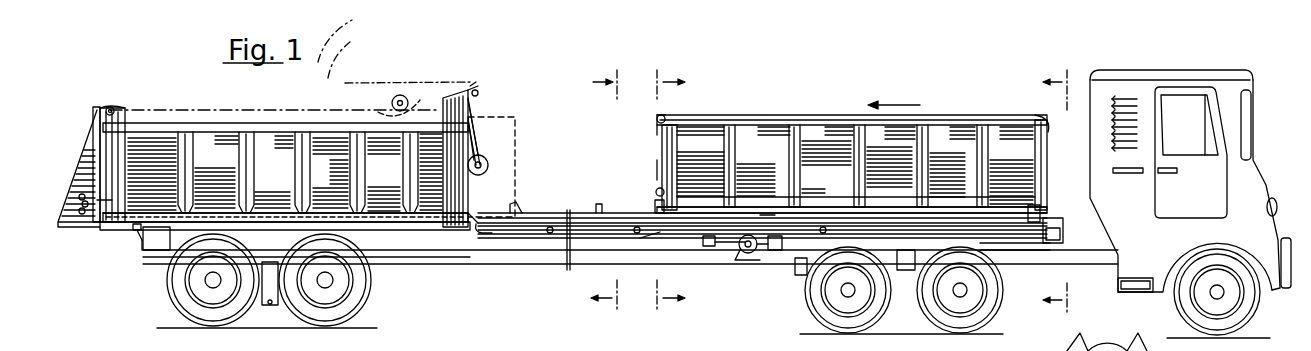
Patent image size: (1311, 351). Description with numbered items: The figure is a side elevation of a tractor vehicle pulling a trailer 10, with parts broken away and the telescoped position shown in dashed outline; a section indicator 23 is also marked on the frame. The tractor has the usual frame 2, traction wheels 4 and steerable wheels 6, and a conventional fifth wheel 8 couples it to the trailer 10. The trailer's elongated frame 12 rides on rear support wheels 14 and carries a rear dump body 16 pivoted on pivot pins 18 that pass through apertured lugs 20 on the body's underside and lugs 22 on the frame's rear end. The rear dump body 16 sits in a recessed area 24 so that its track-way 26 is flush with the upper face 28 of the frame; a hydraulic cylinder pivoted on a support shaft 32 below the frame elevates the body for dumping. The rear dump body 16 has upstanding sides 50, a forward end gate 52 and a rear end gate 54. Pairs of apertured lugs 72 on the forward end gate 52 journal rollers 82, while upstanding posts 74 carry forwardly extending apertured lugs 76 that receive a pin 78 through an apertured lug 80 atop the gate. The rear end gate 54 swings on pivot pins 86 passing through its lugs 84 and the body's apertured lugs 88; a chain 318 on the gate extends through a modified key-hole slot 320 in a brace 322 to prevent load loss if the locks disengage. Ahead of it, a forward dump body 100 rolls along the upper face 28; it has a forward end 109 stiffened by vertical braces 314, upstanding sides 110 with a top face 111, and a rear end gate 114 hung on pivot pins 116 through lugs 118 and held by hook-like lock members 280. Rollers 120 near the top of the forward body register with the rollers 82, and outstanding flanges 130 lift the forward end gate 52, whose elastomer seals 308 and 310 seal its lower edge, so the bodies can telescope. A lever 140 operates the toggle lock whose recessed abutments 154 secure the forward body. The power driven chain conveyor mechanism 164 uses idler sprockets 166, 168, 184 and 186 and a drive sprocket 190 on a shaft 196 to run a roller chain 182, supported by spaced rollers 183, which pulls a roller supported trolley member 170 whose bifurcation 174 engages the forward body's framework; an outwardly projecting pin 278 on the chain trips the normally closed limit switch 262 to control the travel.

The frame 2 is at (1080, 280).
The traction wheels 4 is at (935, 325).
The steerable wheels 6 is at (1252, 325).
The fifth wheel 8 is at (1040, 250).
The trailer 10 is at (500, 264).
The elongated frame 12 is at (440, 258).
The support wheels 14 is at (178, 297).
The rear dump body 16 is at (298, 122).
The pivot pins 18 is at (138, 236).
The apertured lugs 20 is at (136, 228).
The lugs 22 is at (140, 248).
The section line 23 is at (589, 190).
The recessed area 24 is at (404, 232).
The track-way 26 is at (480, 216).
The upper face 28 is at (598, 213).
The support shaft 32 is at (278, 302).
The upstanding sides 50 is at (270, 140).
The forward end gate 52 is at (452, 80).
The rear end gate 54 is at (95, 116).
The apertured lugs 72 is at (416, 86).
The upstanding posts 74 is at (460, 122).
The apertured lug 76 is at (478, 92).
The pin 78 is at (478, 96).
The apertured lug 80 is at (475, 88).
The rollers 82 is at (395, 101).
The lug 84 is at (110, 106).
The pivot pins 86 is at (113, 108).
The apertured lugs 88 is at (122, 118).
The forward dump body 100 is at (805, 116).
The forward end 109 is at (1040, 130).
The upstanding sides 110 is at (960, 125).
The top face 111 is at (830, 118).
The rear end gate 114 is at (660, 148).
The pivot pins 116 is at (658, 118).
The lugs 118 is at (660, 126).
The roller 120 is at (665, 117).
The outstanding flanges 130 is at (660, 168).
The lever 140 is at (614, 214).
The recessed abutments 154 is at (620, 232).
The power driven chain conveyor mechanism 164 is at (545, 248).
The idler sprocket 166 is at (480, 234).
The idler sprocket 168 is at (1062, 238).
The roller supported trolley member 170 is at (1040, 216).
The bifurcation 174 is at (1085, 350).
The roller chain 182 is at (650, 240).
The rollers 183 is at (552, 228).
The idler sprocket 184 is at (745, 255).
The idler sprocket 186 is at (774, 252).
The drive sprocket 190 is at (749, 255).
The shaft 196 is at (760, 258).
The normally closed limit switch 262 is at (703, 243).
The outwardly projecting pin 278 is at (765, 215).
The hook-like lock members 280 is at (657, 188).
The elastomer seal 308 is at (338, 62).
The elastomer seal 310 is at (337, 42).
The vertical braces 314 is at (1046, 148).
The chain 318 is at (90, 225).
The modified key-hole slot 320 is at (88, 195).
The brace 322 is at (112, 200).